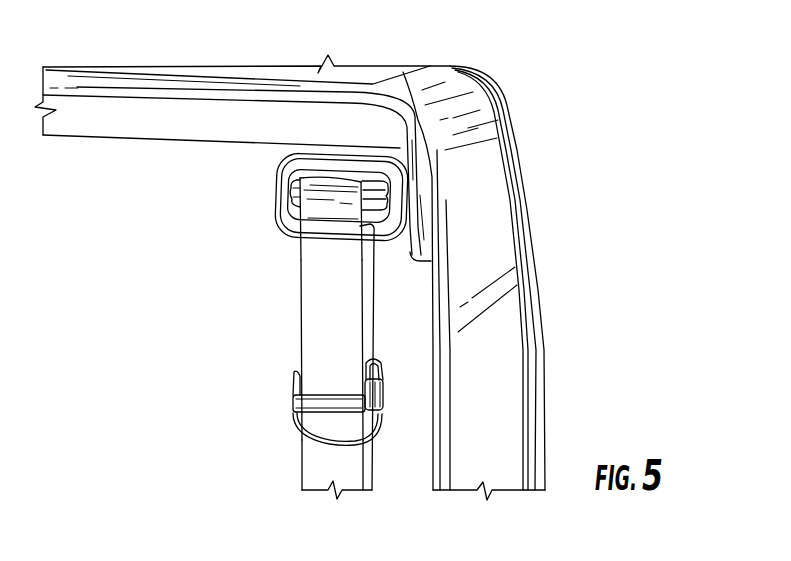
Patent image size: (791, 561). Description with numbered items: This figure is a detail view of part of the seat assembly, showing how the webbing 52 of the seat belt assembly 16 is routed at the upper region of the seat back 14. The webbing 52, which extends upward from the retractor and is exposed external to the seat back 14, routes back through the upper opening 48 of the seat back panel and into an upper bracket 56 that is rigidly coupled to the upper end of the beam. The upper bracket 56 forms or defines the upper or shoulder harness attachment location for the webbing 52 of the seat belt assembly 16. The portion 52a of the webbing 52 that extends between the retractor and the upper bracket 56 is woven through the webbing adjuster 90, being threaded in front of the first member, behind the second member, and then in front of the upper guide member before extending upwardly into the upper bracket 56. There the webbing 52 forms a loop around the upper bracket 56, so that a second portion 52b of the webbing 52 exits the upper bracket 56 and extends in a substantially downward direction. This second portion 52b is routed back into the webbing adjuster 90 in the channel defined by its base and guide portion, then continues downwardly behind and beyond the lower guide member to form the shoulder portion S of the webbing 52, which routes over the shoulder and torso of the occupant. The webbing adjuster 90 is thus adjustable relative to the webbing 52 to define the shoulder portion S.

The seat back 14 is at (163, 307).
The seat belt assembly 16 is at (255, 463).
The upper opening 48 is at (260, 218).
The webbing 52 is at (307, 263).
The portion of the webbing 52a is at (367, 268).
The second portion of the webbing 52b is at (312, 302).
The upper bracket 56 is at (297, 183).
The webbing adjuster 90 is at (293, 403).
The shoulder portion S is at (312, 455).